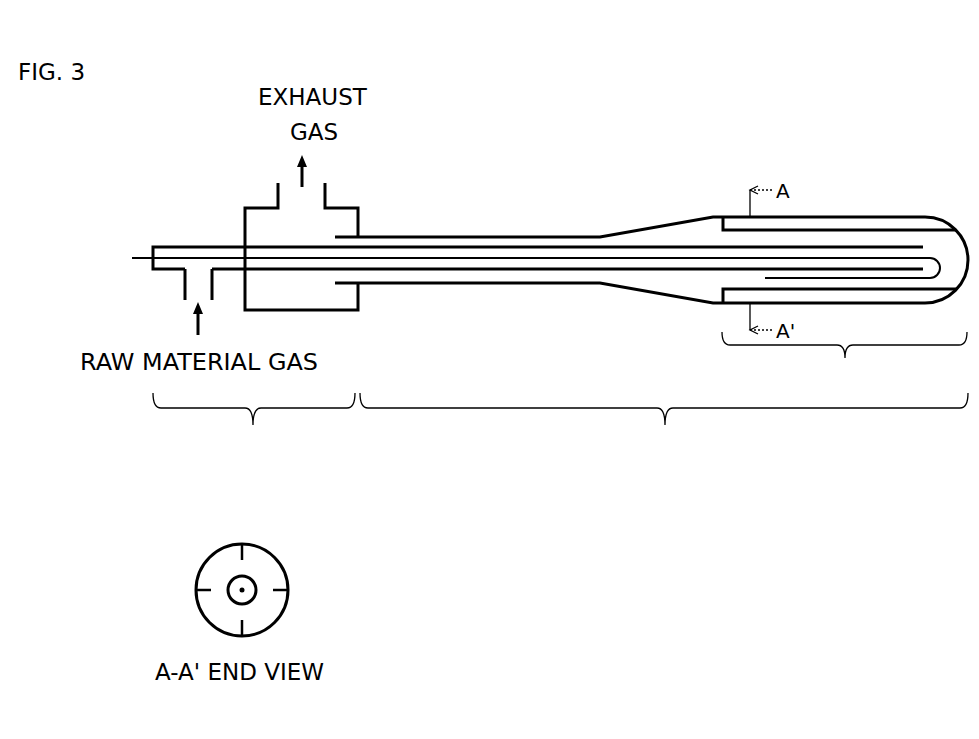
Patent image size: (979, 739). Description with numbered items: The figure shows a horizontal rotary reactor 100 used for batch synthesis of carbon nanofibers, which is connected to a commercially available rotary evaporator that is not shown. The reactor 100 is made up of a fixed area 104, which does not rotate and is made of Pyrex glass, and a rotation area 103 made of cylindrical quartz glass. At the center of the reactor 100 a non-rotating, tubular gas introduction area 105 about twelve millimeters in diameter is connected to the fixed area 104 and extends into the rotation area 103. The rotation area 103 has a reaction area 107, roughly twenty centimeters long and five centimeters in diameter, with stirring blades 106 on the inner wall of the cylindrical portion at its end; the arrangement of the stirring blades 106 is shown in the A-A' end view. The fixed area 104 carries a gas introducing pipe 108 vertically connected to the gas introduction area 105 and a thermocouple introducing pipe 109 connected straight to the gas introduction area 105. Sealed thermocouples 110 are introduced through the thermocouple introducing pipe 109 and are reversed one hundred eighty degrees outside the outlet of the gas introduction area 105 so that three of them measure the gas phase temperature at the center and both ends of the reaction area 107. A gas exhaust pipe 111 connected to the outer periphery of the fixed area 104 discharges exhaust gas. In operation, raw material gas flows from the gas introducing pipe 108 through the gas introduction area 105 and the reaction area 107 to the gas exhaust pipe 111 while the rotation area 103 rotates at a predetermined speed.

The horizontal rotary reactor 100 is at (593, 173).
The rotation area 103 is at (664, 426).
The fixed area 104 is at (254, 426).
The gas introduction area 105 is at (418, 246).
The stirring blades 106 is at (875, 228).
The reaction area 107 is at (844, 362).
The gas introducing pipe 108 is at (183, 290).
The thermocouple introducing pipe 109 is at (167, 246).
The sealed thermocouples 110 is at (527, 258).
The gas exhaust pipe 111 is at (277, 205).